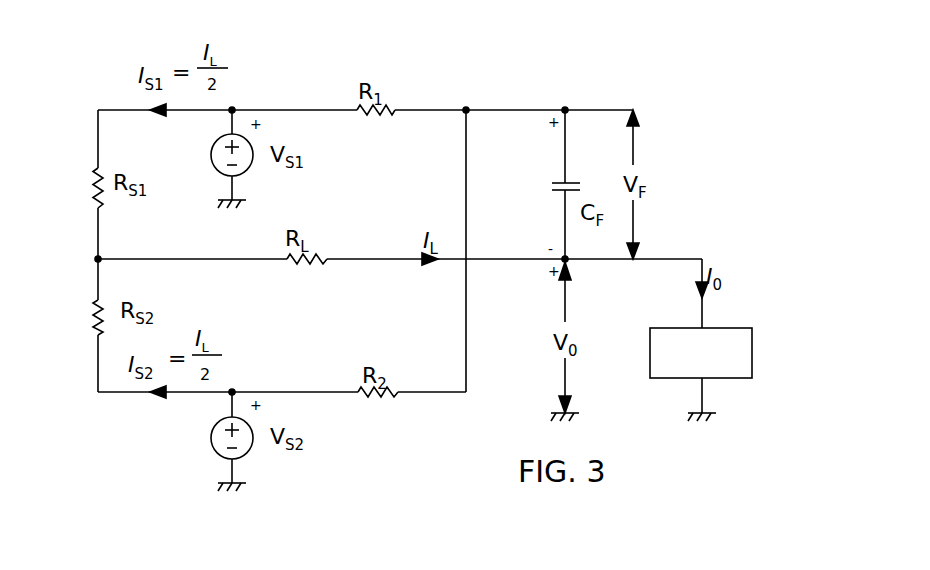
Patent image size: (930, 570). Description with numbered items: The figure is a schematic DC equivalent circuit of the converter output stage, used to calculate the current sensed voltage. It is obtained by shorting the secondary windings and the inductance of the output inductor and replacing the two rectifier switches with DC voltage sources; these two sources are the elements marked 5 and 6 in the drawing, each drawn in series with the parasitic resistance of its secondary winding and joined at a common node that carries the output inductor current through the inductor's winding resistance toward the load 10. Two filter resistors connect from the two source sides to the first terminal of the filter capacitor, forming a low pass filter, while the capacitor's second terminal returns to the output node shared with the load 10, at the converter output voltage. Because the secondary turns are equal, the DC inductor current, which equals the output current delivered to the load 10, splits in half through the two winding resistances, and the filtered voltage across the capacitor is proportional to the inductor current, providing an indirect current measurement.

The first voltage source 5 is at (232, 110).
The second voltage source 6 is at (232, 392).
The load 10 is at (733, 328).